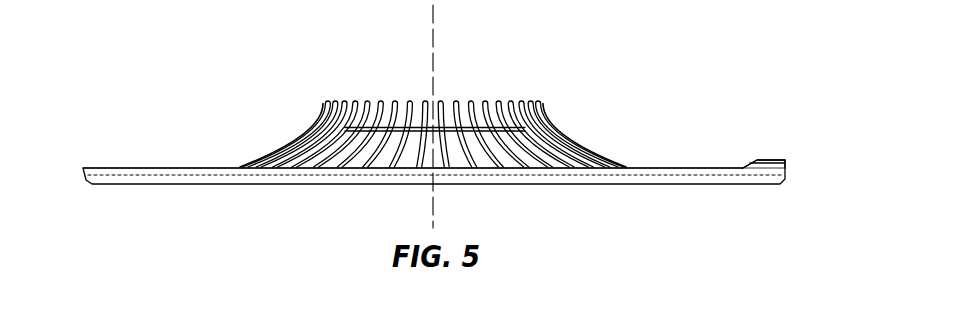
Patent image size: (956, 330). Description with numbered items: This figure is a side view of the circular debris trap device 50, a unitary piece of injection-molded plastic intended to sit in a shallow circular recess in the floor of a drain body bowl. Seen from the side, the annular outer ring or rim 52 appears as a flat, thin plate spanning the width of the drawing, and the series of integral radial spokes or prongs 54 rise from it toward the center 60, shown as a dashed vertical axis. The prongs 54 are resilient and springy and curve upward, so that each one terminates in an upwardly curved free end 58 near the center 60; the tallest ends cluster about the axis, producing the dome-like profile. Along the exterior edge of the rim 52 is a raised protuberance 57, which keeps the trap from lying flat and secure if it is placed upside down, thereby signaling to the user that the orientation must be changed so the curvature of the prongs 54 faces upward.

The debris trap device 50 is at (268, 119).
The annular outer ring or rim 52 is at (121, 168).
The radial spokes or prongs 54 is at (548, 117).
The raised protuberance 57 is at (768, 159).
The free end 58 is at (437, 103).
The center 60 is at (432, 33).